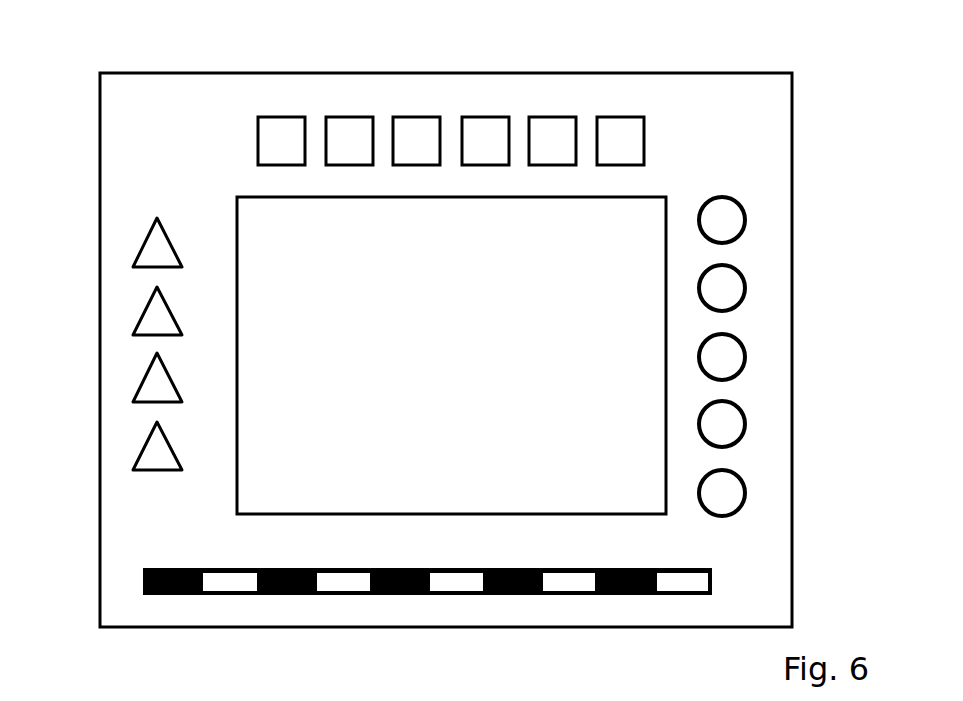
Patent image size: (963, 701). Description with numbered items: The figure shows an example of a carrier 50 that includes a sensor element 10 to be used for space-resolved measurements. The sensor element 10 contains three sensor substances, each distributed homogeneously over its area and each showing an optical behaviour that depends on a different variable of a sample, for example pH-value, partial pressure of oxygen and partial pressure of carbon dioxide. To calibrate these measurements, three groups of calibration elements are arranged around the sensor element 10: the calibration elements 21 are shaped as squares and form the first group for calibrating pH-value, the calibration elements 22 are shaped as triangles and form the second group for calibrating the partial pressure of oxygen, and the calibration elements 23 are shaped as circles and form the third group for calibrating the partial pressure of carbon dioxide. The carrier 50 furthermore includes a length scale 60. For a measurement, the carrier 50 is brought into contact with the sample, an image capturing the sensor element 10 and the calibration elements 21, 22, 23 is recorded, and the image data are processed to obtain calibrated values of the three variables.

The sensor element 10 is at (470, 373).
The calibration elements 21 is at (273, 117).
The calibration elements 22 is at (148, 232).
The calibration elements 23 is at (745, 215).
The carrier 50 is at (792, 112).
The length scale 60 is at (682, 595).